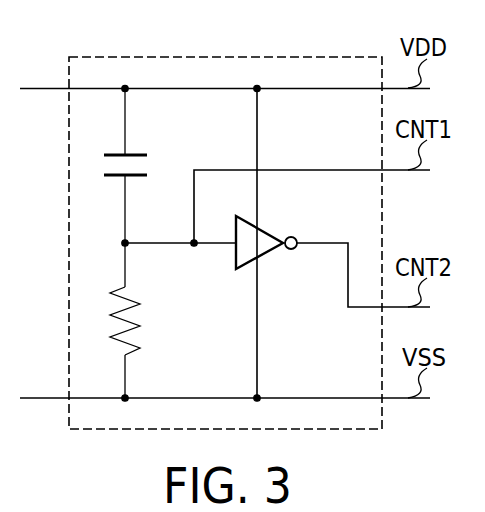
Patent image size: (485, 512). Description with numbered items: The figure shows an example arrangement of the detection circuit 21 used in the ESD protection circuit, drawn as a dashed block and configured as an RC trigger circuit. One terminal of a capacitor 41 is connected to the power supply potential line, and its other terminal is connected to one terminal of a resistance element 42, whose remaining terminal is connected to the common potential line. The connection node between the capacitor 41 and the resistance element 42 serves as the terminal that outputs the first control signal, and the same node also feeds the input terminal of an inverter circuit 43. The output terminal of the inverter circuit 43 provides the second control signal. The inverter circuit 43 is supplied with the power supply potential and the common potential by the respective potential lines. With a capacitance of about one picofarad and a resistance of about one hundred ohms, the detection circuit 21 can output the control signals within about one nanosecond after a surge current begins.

The detection circuit 21 is at (238, 57).
The capacitor 41 is at (150, 164).
The resistance element 42 is at (145, 319).
The inverter circuit 43 is at (270, 250).